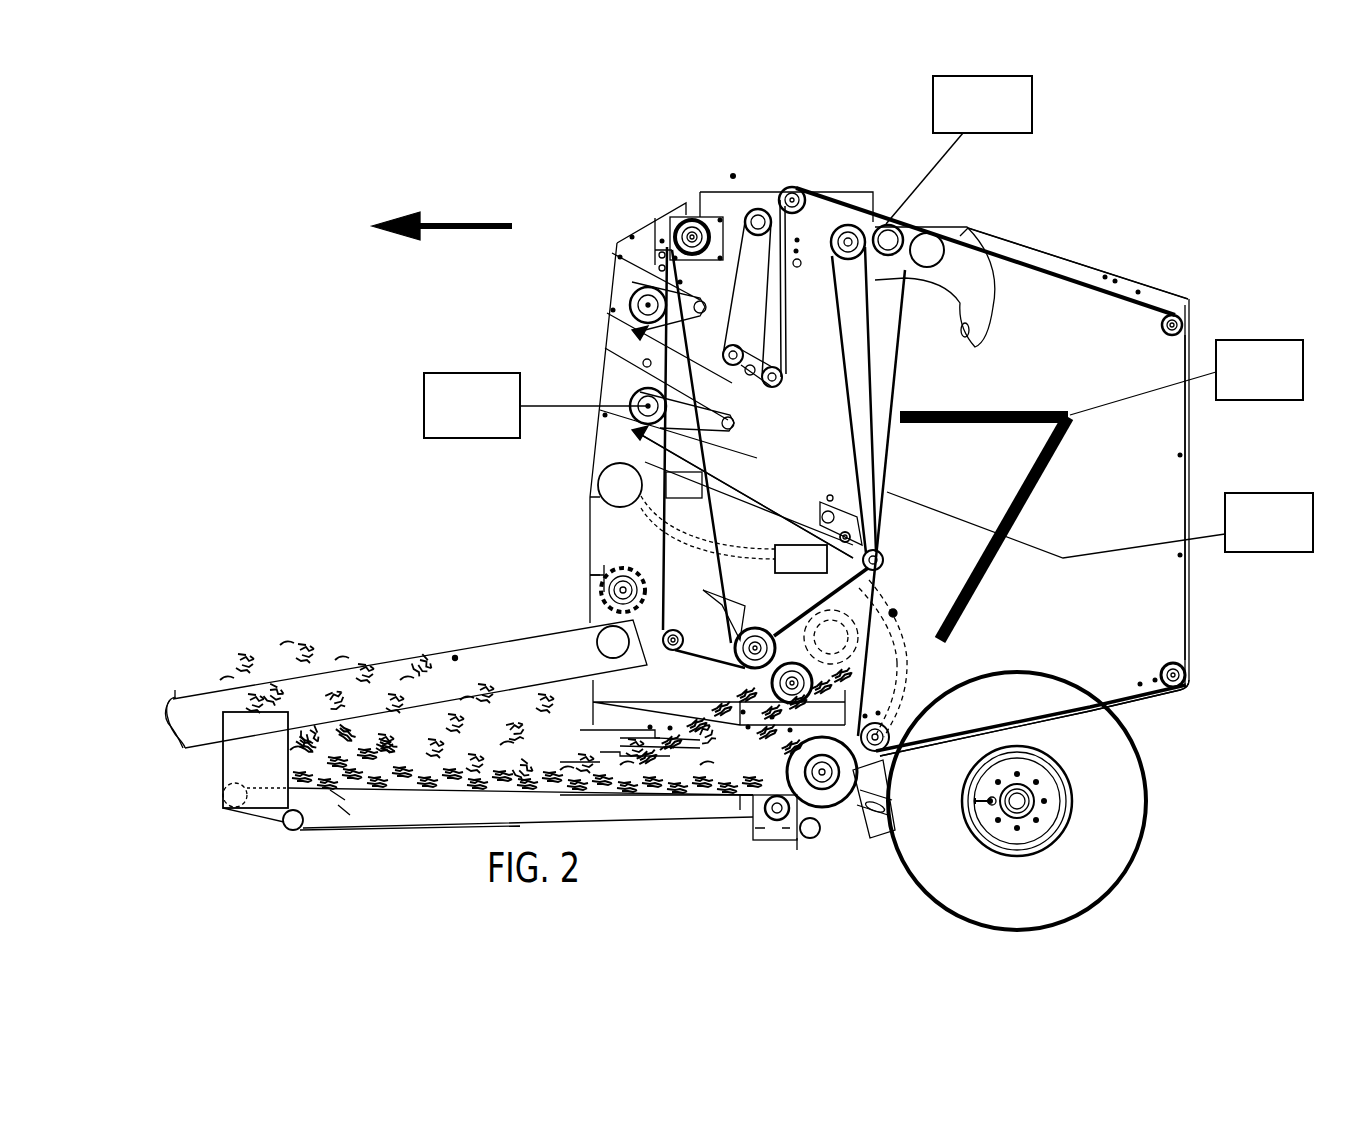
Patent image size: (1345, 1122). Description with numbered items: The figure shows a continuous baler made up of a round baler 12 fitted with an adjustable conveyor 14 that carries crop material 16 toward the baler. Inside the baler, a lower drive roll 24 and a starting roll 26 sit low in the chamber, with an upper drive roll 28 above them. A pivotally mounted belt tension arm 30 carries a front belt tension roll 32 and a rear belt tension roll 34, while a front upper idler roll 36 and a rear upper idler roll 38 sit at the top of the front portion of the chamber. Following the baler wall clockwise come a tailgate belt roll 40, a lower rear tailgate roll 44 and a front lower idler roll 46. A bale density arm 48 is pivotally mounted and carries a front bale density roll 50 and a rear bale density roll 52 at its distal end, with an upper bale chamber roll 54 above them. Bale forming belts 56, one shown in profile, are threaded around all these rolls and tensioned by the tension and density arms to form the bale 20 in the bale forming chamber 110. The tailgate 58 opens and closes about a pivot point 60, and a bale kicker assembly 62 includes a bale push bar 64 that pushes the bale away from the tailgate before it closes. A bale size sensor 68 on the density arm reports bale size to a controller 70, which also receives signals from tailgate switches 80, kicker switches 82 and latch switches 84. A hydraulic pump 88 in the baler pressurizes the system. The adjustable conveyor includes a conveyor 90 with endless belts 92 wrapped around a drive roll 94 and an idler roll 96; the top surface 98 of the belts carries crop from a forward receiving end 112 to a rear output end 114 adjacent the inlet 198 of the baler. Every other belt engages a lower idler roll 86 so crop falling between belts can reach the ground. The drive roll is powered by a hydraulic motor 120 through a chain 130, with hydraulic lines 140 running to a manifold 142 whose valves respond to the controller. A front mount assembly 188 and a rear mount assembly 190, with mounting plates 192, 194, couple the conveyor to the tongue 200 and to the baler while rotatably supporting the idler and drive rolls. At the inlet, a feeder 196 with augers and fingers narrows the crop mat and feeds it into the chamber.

The round baler 12 is at (1077, 265).
The adjustable conveyor 14 is at (405, 828).
The crop material 16 is at (566, 775).
The bale 20 is at (830, 620).
The lower drive roll 24 is at (765, 632).
The starting roll 26 is at (790, 664).
The upper drive roll 28 is at (686, 218).
The belt tension arm 30 is at (646, 302).
The front belt tension roll 32 is at (735, 365).
The rear belt tension roll 34 is at (774, 387).
The front upper idler roll 36 is at (752, 212).
The rear upper idler roll 38 is at (797, 189).
The tailgate belt roll 40 is at (1178, 312).
The lower rear tailgate roll 44 is at (1186, 677).
The front lower idler roll 46 is at (888, 752).
The bale density arm 48 is at (750, 464).
The front bale density roll 50 is at (845, 530).
The rear bale density roll 52 is at (882, 556).
The upper bale chamber roll 54 is at (849, 230).
The bale forming belts 56 is at (718, 516).
The tailgate 58 is at (1130, 695).
The pivot point 60 is at (898, 230).
The bale kicker assembly 62 is at (1012, 405).
The bale push bar 64 is at (1033, 494).
The bale size sensor 68 is at (424, 382).
The controller 70 is at (684, 485).
The tailgate switches 80 is at (1033, 105).
The kicker switches 82 is at (1248, 340).
The latch switches 84 is at (1250, 493).
The lower idler roll 86 is at (284, 826).
The hydraulic pump 88 is at (620, 485).
The conveyor 90 is at (455, 828).
The endless belts 92 is at (342, 825).
The drive roll 94 is at (762, 826).
The idler roll 96 is at (232, 806).
The top surface 98 is at (580, 780).
The bale forming chamber 110 is at (874, 602).
The receiving end 112 is at (222, 781).
The output end 114 is at (718, 802).
The hydraulic motor 120 is at (808, 839).
The chain 130 is at (776, 836).
The hydraulic lines 140 is at (905, 686).
The manifold 142 is at (801, 559).
The front mount assembly 188 is at (238, 738).
The rear mount assembly 190 is at (762, 832).
The mounting plate 192 is at (233, 745).
The mounting plate 194 is at (792, 838).
The feeder 196 is at (823, 800).
The inlet 198 is at (896, 618).
The tongue 200 is at (477, 651).